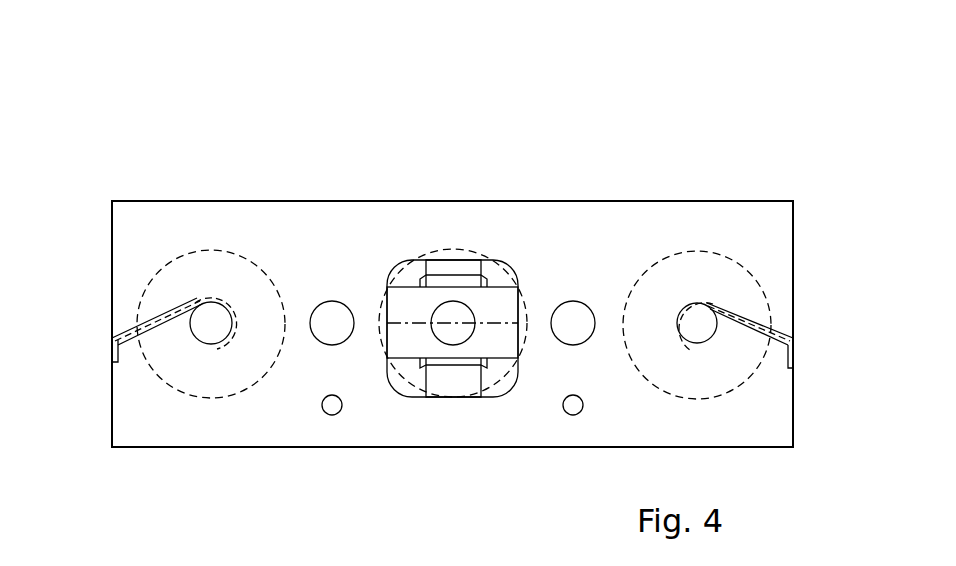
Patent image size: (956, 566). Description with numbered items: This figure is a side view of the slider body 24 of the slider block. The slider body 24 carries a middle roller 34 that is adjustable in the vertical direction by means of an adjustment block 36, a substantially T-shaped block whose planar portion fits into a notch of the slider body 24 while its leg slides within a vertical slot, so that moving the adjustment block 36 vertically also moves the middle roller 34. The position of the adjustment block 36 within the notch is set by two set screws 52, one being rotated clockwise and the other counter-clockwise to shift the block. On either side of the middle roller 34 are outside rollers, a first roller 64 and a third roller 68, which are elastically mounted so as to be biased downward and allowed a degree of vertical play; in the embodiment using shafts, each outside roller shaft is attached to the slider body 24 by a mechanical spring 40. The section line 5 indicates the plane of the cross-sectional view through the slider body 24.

The slider body 24 is at (476, 135).
The section line 5- 5 is at (386, 323).
The middle roller 34 is at (468, 250).
The adjustment block 36 is at (497, 343).
The set screws 52 is at (447, 267).
The first roller 64 is at (205, 250).
The third roller 68 is at (737, 267).
The mechanical spring 40 is at (122, 360).